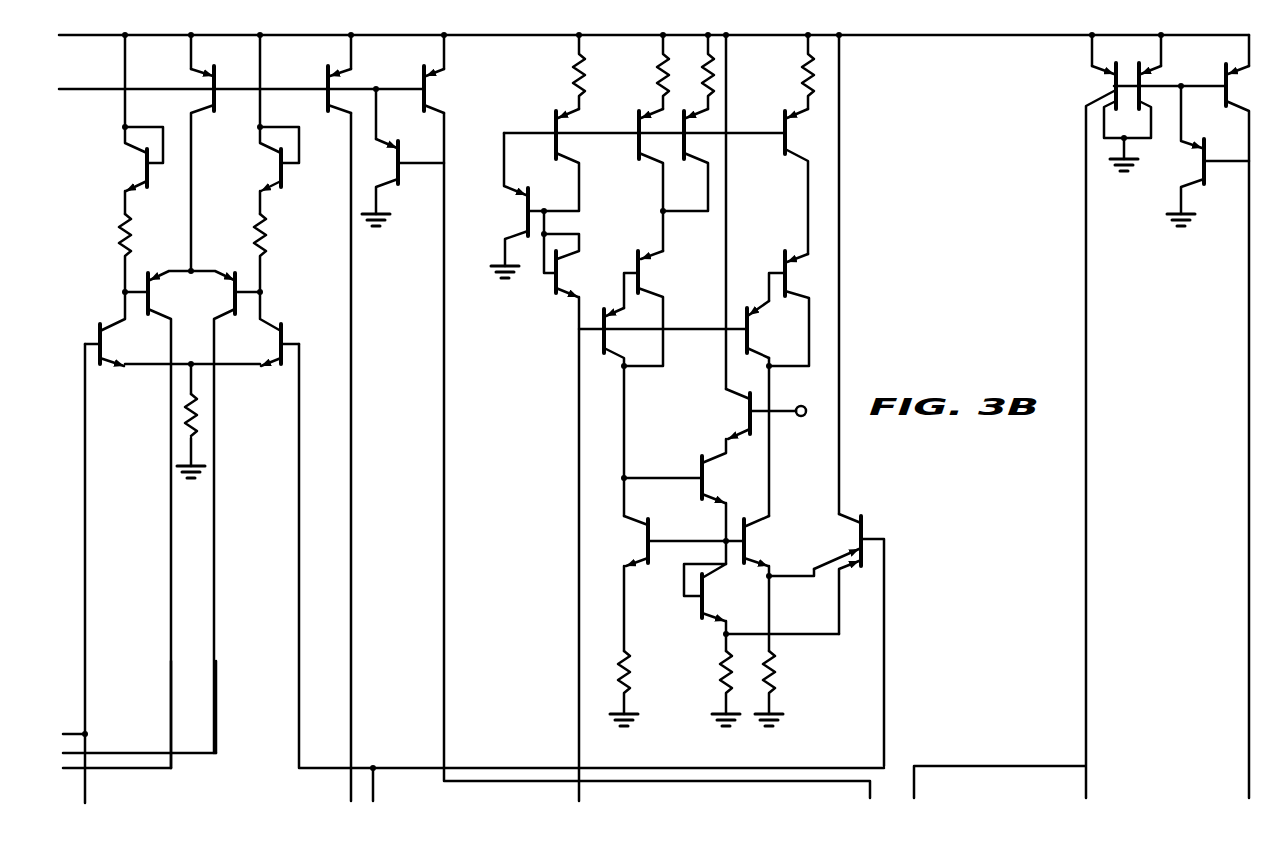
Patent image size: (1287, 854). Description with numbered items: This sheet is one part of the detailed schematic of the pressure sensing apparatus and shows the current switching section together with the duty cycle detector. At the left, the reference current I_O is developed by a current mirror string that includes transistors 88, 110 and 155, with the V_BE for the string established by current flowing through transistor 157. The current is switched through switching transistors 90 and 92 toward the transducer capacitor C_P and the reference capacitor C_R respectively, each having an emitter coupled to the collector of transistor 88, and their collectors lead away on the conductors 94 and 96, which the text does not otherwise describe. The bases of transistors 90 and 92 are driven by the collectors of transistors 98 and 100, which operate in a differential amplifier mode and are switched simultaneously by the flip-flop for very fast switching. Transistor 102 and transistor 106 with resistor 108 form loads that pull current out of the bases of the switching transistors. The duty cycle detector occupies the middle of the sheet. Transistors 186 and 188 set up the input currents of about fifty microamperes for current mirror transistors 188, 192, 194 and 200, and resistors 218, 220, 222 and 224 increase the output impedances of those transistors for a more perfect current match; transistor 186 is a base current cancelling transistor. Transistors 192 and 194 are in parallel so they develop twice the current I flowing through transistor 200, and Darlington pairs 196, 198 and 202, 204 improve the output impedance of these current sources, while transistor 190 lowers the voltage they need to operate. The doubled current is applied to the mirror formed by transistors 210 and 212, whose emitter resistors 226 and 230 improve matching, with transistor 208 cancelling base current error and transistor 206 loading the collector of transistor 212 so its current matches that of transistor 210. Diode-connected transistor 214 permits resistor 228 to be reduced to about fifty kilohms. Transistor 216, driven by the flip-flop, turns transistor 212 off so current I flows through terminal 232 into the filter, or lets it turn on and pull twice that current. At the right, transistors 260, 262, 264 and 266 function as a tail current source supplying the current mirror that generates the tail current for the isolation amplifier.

The transistor 88 is at (240, 66).
The switching transistor 90 is at (147, 313).
The switching transistor 92 is at (243, 262).
The output line 94 is at (168, 706).
The output line 96 is at (217, 706).
The transistor 98 is at (99, 366).
The transistor 100 is at (283, 366).
The transistor 102 is at (272, 152).
The transistor 106 is at (140, 152).
The resistor 108 is at (127, 242).
The transistor 110 is at (196, 412).
The transistor 155 is at (318, 78).
The transistor 157 is at (414, 78).
The transistor 186 is at (515, 226).
The current mirror transistor 188 is at (548, 148).
The transistor 190 is at (550, 290).
The current mirror transistor 192 is at (628, 150).
The current mirror transistor 194 is at (680, 146).
The transistor 196 is at (590, 352).
The transistor 198 is at (660, 290).
The current mirror transistor 200 is at (770, 146).
The transistor 202 is at (736, 346).
The transistor 204 is at (784, 248).
The transistor 206 is at (740, 412).
The transistor 208 is at (696, 464).
The current mirror transistor 210 is at (652, 522).
The current mirror transistor 212 is at (758, 538).
The transistor 214 is at (698, 618).
The transistor 216 is at (870, 522).
The resistor 218 is at (568, 74).
The resistor 220 is at (652, 74).
The resistor 222 is at (722, 74).
The resistor 224 is at (800, 92).
The resistor 226 is at (632, 676).
The resistor 228 is at (716, 684).
The resistor 230 is at (778, 676).
The terminal 232 is at (808, 416).
The transistor 260 is at (1098, 84).
The transistor 262 is at (1152, 84).
The transistor 264 is at (1220, 98).
The transistor 266 is at (1210, 172).